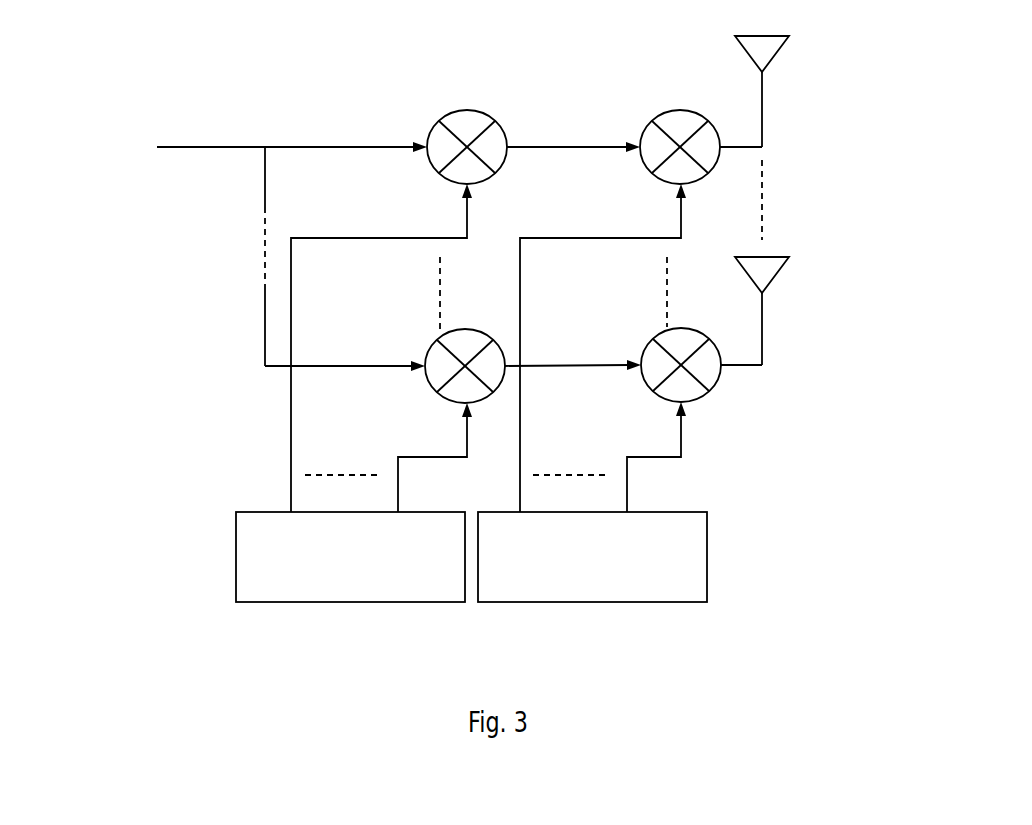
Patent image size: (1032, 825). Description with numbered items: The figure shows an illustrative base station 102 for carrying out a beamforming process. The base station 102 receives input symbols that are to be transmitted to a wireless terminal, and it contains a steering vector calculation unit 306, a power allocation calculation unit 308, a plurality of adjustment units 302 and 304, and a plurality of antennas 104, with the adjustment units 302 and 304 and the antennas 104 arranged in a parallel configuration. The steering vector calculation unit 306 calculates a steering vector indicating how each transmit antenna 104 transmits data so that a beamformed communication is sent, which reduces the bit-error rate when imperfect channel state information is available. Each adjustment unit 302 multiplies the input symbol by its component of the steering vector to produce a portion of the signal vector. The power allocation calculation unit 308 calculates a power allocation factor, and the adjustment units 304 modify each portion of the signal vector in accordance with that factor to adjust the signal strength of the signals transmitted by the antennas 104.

The base station 102 is at (108, 214).
The antennas 104 is at (776, 58).
The adjustment units 302 is at (477, 115).
The adjustment units 304 is at (690, 115).
The steering vector calculation unit 306 is at (236, 568).
The power allocation calculation unit 308 is at (707, 552).